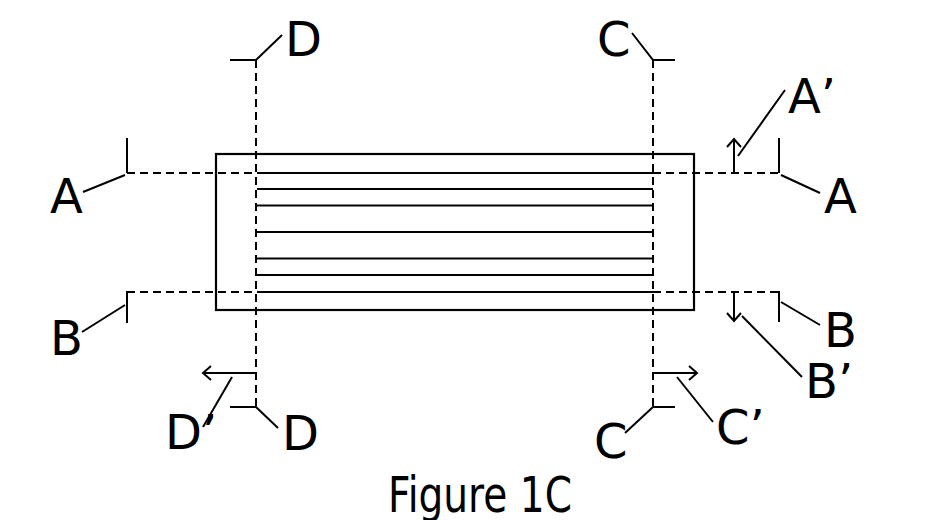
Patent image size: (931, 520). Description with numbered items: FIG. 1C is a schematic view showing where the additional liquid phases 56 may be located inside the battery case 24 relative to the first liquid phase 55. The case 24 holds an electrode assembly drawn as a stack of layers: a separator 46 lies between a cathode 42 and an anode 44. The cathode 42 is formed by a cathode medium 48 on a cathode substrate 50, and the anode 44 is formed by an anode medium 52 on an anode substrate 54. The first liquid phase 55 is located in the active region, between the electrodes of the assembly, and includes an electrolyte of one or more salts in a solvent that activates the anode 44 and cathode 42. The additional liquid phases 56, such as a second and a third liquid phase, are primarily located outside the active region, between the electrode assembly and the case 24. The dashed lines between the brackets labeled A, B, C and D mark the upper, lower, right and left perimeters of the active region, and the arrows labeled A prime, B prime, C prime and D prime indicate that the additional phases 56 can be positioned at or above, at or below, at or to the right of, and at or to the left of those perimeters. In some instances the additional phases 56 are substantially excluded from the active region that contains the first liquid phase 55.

The case 24 is at (216, 232).
The cathode 42 is at (384, 158).
The anode 44 is at (390, 306).
The separator 46 is at (640, 235).
The cathode medium 48 is at (638, 205).
The cathode substrate 50 is at (503, 182).
The anode medium 52 is at (493, 267).
The anode substrate 54 is at (558, 285).
The first liquid phase 55 is at (299, 218).
The additional liquid phases 56 is at (302, 302).